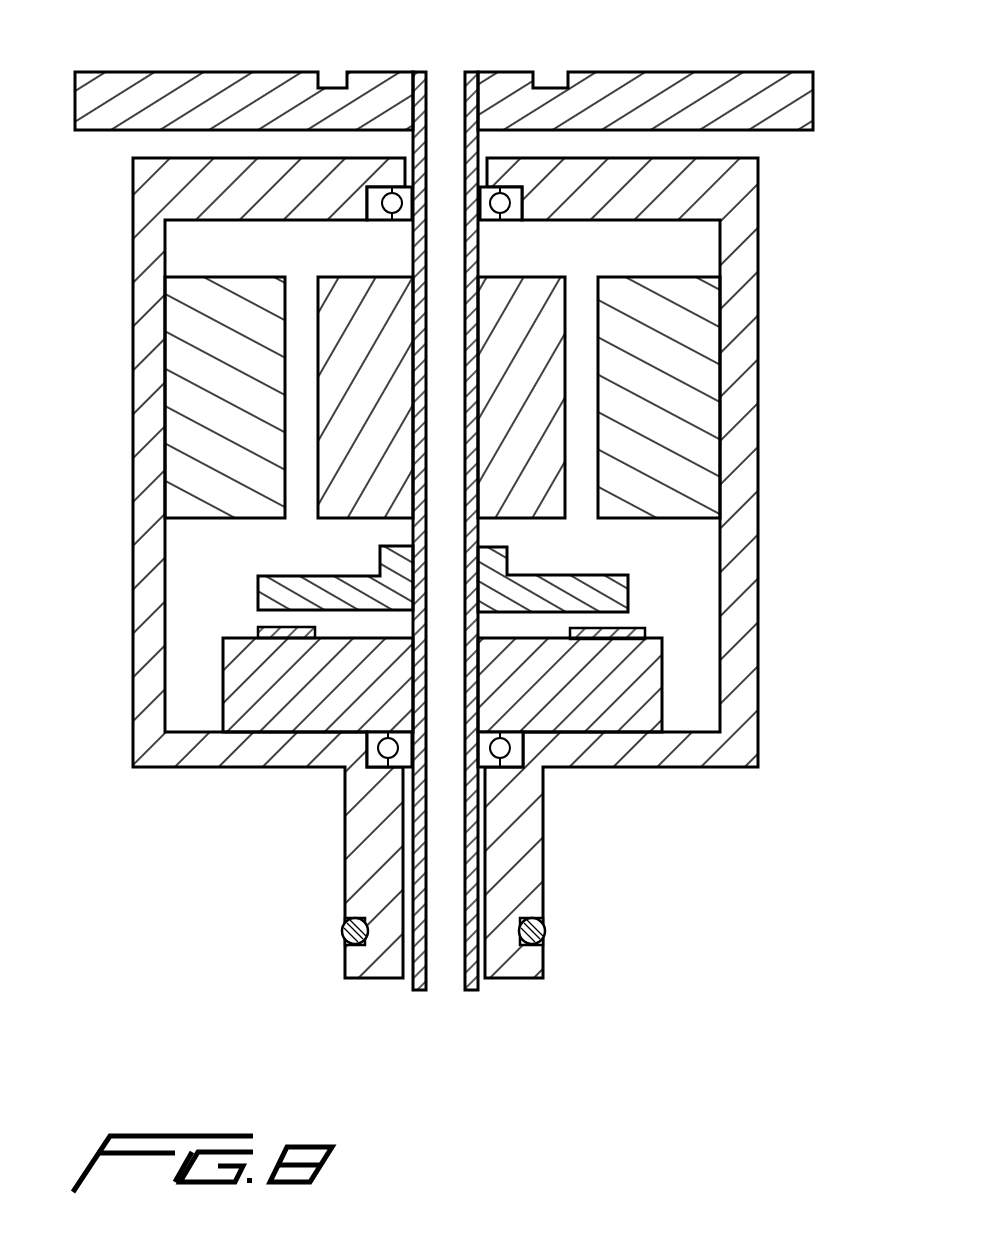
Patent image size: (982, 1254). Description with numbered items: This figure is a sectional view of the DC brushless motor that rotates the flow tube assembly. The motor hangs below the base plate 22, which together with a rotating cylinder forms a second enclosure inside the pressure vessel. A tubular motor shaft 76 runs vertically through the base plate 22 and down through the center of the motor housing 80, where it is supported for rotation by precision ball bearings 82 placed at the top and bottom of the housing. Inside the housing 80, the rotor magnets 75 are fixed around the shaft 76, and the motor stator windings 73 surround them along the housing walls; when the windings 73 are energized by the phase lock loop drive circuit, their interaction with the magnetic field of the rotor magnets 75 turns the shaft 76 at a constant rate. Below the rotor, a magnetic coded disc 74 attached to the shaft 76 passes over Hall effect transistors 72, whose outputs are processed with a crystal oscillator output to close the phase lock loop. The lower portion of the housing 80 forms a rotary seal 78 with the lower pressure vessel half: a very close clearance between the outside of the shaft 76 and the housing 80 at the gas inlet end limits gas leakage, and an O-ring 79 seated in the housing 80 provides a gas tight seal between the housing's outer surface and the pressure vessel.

The base plate 22 is at (808, 108).
The Hall effect transistors 72 is at (258, 630).
The motor stator windings 73 is at (220, 508).
The magnetic coded disc 74 is at (305, 580).
The rotor magnets 75 is at (320, 284).
The motor shaft 76 is at (428, 90).
The rotary seal 78 is at (413, 531).
The O-ring 79 is at (340, 932).
The motor housing 80 is at (140, 688).
The precision ball bearings 82 is at (405, 213).